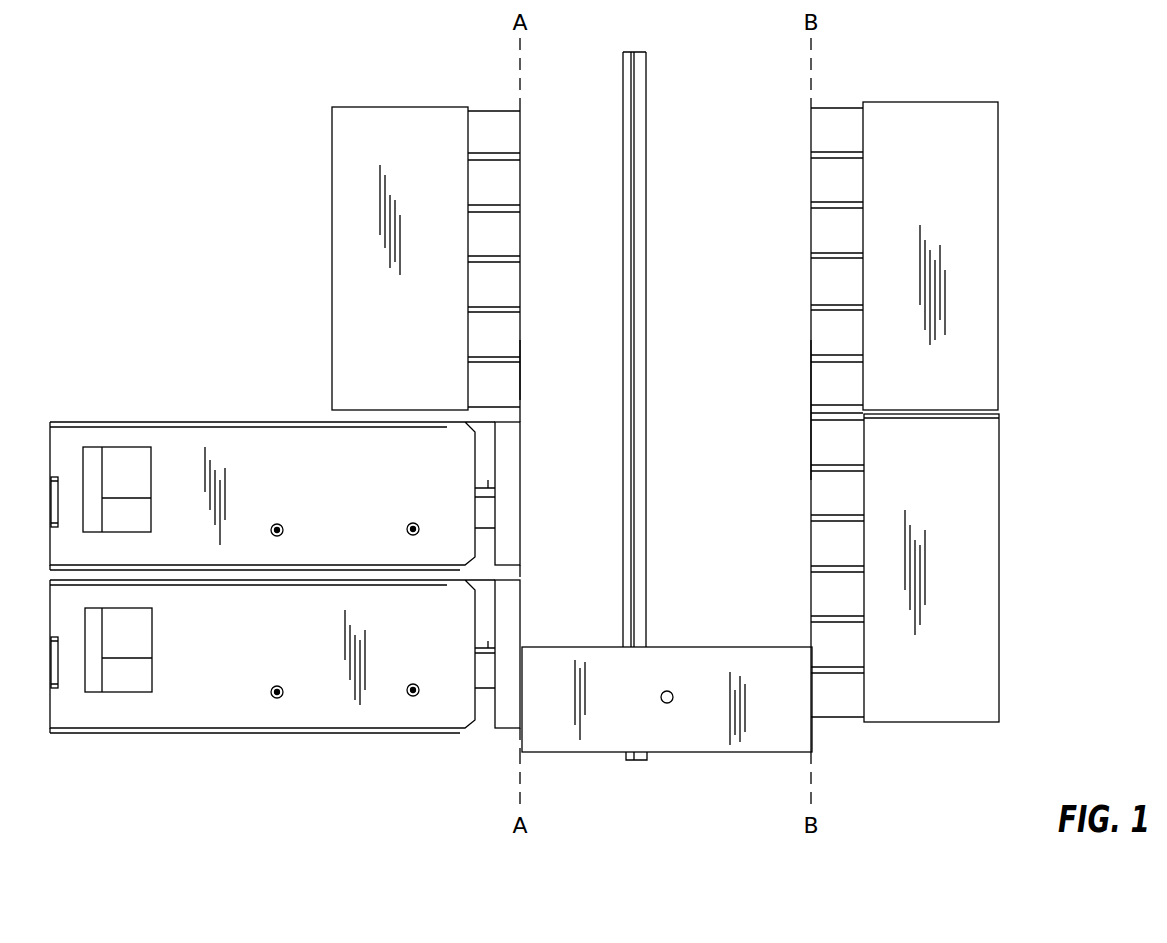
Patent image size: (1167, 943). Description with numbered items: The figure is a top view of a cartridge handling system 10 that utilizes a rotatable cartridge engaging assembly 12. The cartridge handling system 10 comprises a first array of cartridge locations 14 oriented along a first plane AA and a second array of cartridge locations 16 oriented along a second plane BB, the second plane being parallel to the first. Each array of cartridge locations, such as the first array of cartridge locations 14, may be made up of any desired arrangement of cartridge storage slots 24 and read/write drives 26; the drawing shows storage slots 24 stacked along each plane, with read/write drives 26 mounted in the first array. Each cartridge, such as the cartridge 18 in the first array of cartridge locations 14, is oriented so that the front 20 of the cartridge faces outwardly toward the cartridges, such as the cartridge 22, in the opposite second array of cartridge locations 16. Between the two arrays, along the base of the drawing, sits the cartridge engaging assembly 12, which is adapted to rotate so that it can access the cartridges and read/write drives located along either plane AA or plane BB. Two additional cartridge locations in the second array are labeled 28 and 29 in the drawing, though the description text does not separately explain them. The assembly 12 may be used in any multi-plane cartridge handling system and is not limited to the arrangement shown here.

The cartridge handling system 10 is at (152, 78).
The cartridge engaging assembly 12 is at (716, 647).
The first array of cartridge locations 14 is at (491, 100).
The second array of cartridge locations 16 is at (838, 100).
The cartridge 18 is at (510, 280).
The front of the cartridge 20 is at (522, 295).
The cartridge 22 is at (822, 387).
The cartridge storage slot 24 is at (545, 356).
The read/write drive 26 is at (541, 541).
The module 28 is at (811, 495).
The module 29 is at (811, 542).